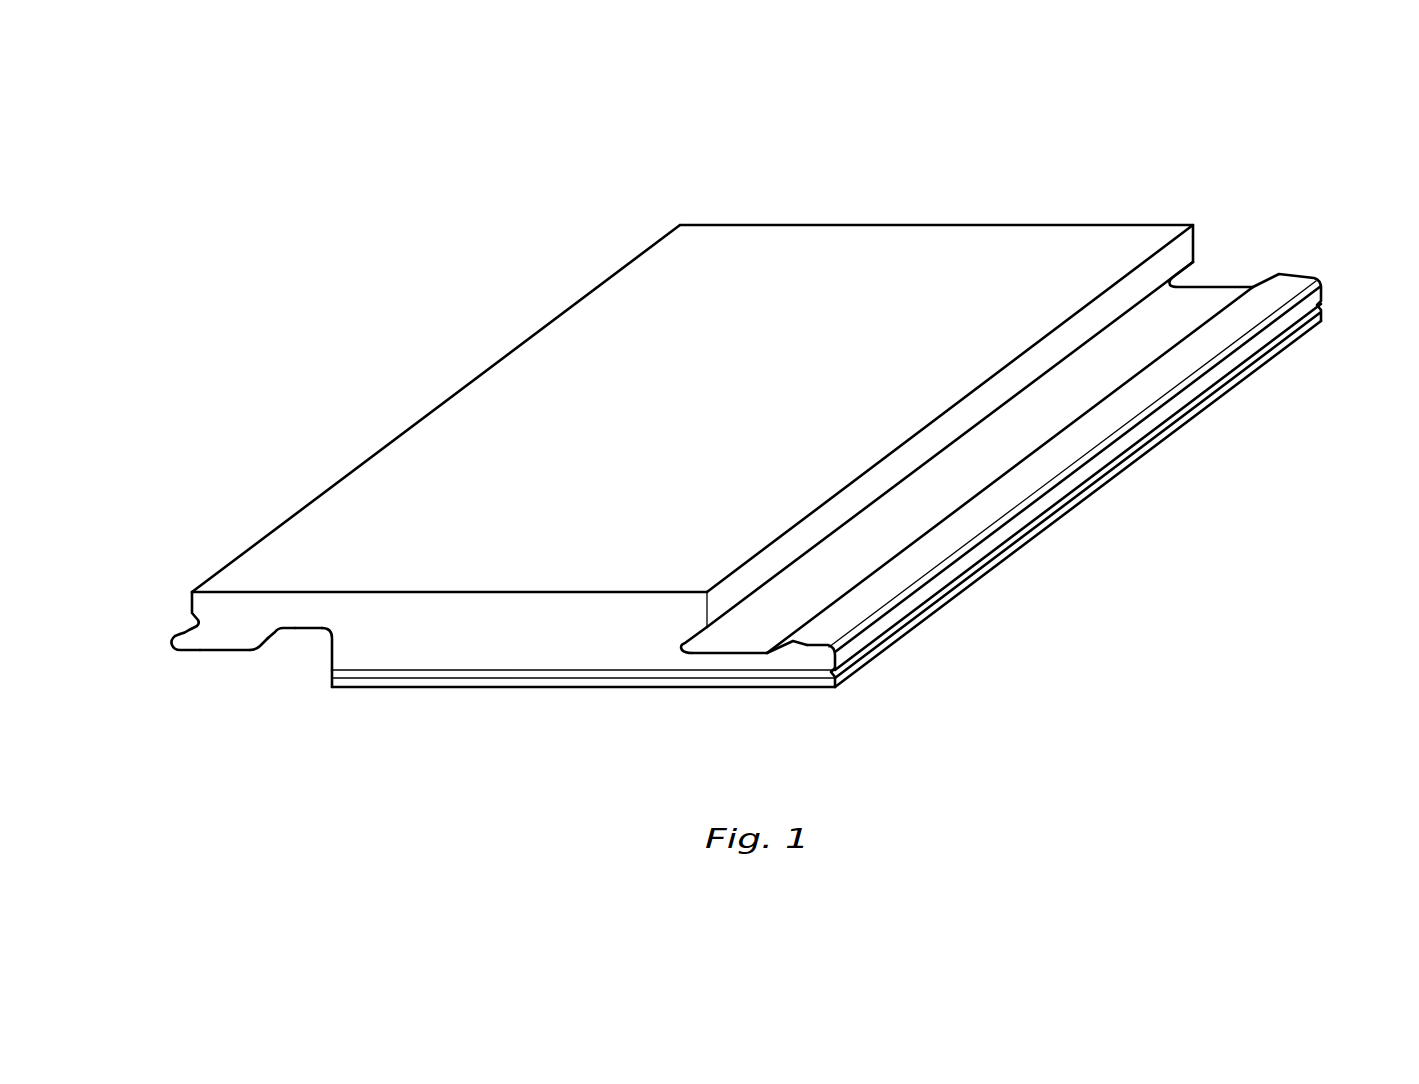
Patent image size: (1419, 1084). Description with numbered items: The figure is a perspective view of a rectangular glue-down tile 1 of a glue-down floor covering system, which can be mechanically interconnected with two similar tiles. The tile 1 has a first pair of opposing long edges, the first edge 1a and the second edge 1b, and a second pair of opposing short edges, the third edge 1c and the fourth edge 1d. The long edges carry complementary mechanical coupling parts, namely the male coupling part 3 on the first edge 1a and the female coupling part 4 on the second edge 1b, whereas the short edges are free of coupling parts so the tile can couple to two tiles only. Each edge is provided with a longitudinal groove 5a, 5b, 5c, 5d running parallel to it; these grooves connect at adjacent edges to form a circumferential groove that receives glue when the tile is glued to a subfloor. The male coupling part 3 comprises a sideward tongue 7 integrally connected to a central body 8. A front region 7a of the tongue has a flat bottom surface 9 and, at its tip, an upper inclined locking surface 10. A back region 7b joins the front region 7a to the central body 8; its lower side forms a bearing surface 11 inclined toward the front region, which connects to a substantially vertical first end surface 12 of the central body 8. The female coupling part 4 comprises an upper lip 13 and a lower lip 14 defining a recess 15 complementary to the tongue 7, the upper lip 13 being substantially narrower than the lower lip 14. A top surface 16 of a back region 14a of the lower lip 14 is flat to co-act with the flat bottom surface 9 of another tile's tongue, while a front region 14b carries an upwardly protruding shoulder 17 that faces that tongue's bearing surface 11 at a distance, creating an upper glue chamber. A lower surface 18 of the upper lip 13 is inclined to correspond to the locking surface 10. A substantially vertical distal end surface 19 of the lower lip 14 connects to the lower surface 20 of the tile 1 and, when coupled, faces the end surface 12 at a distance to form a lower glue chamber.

The glue-down tile 1 is at (457, 289).
The first edge 1a is at (175, 603).
The second edge 1b is at (1031, 562).
The third edge 1c is at (428, 710).
The fourth edge 1d is at (1029, 210).
The male coupling part 3 is at (212, 657).
The sideward tongue 7 is at (219, 708).
The female coupling part 4 is at (748, 632).
The longitudinal groove 5a is at (331, 673).
The longitudinal groove 5b is at (878, 644).
The longitudinal groove 5c is at (545, 677).
The longitudinal groove 5d is at (1321, 307).
The front region of the sideward tongue 7a is at (214, 640).
The back region of the sideward tongue 7b is at (320, 621).
The central body 8 is at (499, 640).
The flat bottom surface 9 is at (190, 653).
The inclined locking surface 10 is at (186, 630).
The bearing surface 11 is at (300, 631).
The first end surface 12 is at (335, 657).
The upper lip 13 is at (693, 613).
The lower lip 14 is at (750, 664).
The back region of the lower lip 14a is at (1212, 300).
The front region of the lower lip 14b is at (1292, 288).
The recess 15 is at (707, 637).
The top surface 16 is at (718, 656).
The upwardly protruding shoulder 17 is at (808, 648).
The lower surface of the upper lip 18 is at (694, 641).
The distal end surface 19 is at (918, 598).
The lower surface 20 is at (492, 689).